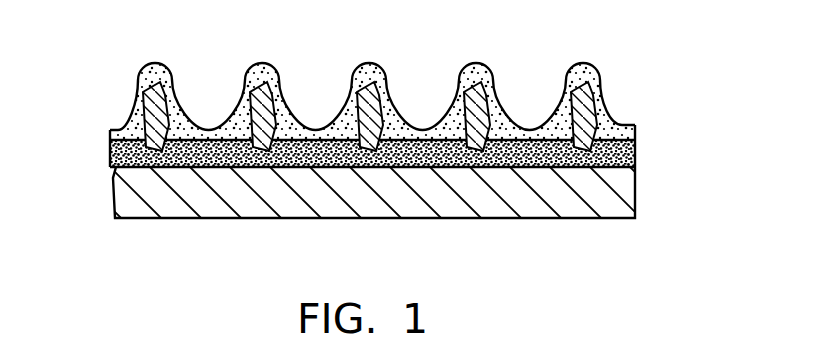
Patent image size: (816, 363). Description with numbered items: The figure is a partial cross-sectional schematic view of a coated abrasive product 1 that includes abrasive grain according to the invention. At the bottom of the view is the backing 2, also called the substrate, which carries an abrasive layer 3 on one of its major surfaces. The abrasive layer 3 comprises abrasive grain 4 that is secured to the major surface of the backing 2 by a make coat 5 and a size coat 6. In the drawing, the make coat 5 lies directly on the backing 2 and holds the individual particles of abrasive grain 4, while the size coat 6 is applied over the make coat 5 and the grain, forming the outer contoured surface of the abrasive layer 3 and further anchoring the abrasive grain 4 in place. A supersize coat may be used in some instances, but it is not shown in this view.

The coated abrasive product 1 is at (364, 132).
The backing 2 is at (207, 203).
The abrasive layer 3 is at (364, 97).
The abrasive grain 4 is at (265, 87).
The make coat 5 is at (112, 157).
The size coat 6 is at (132, 120).